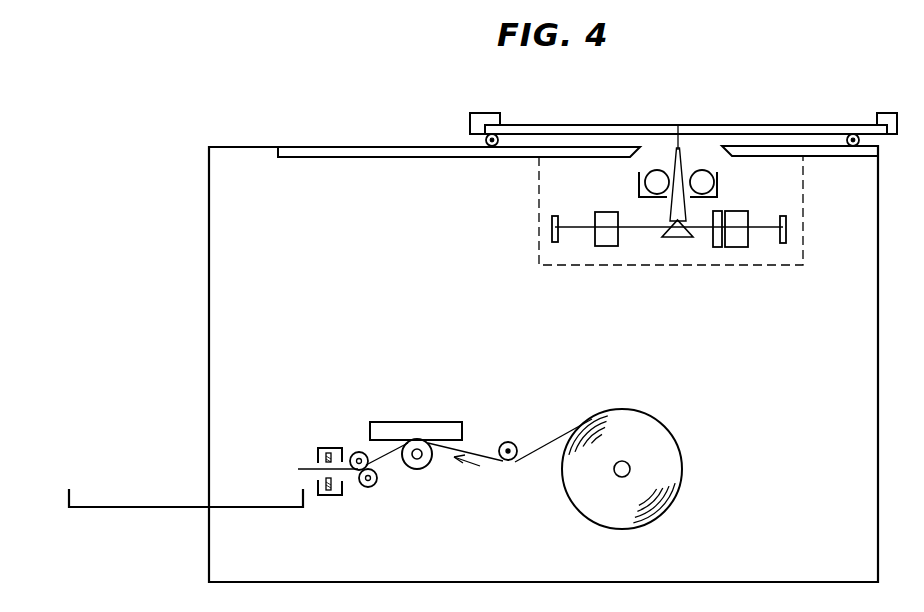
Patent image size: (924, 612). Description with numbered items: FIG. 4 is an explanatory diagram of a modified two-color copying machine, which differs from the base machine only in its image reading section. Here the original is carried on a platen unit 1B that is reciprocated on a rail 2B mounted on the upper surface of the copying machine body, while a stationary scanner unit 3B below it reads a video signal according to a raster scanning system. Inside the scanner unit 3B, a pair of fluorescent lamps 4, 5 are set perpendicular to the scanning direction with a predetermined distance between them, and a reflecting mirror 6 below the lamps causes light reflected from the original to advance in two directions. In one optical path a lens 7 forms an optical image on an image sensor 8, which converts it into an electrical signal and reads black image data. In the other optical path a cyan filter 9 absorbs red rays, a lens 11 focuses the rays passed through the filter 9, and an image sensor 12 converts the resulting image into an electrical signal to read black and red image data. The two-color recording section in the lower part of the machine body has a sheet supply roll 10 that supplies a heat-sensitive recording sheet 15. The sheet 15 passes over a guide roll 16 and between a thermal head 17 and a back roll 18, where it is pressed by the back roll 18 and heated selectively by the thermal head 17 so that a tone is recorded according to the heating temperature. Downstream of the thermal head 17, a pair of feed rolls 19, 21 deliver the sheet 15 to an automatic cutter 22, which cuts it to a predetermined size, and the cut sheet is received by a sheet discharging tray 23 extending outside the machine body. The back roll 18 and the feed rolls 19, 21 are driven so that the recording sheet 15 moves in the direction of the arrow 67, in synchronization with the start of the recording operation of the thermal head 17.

The platen unit 1B is at (800, 117).
The rail 2B is at (343, 157).
The stationary scanner unit 3B is at (803, 196).
The fluorescent lamp 4 is at (657, 170).
The fluorescent lamp 5 is at (700, 170).
The reflecting mirror 6 is at (667, 233).
The lens 7 is at (604, 212).
The image sensor 8 is at (557, 215).
The cyan filter 9 is at (720, 211).
The lens 11 is at (739, 211).
The image sensor 12 is at (783, 216).
The sheet supply roll 10 is at (640, 418).
The heat-sensitive recording sheet 15 is at (556, 432).
The guide roll 16 is at (509, 442).
The thermal head 17 is at (430, 422).
The back roll 18 is at (419, 469).
The feed roll 19 is at (353, 452).
The feed roll 21 is at (368, 487).
The automatic cutter 22 is at (312, 447).
The sheet discharging tray 23 is at (143, 502).
The arrow 67 is at (480, 466).